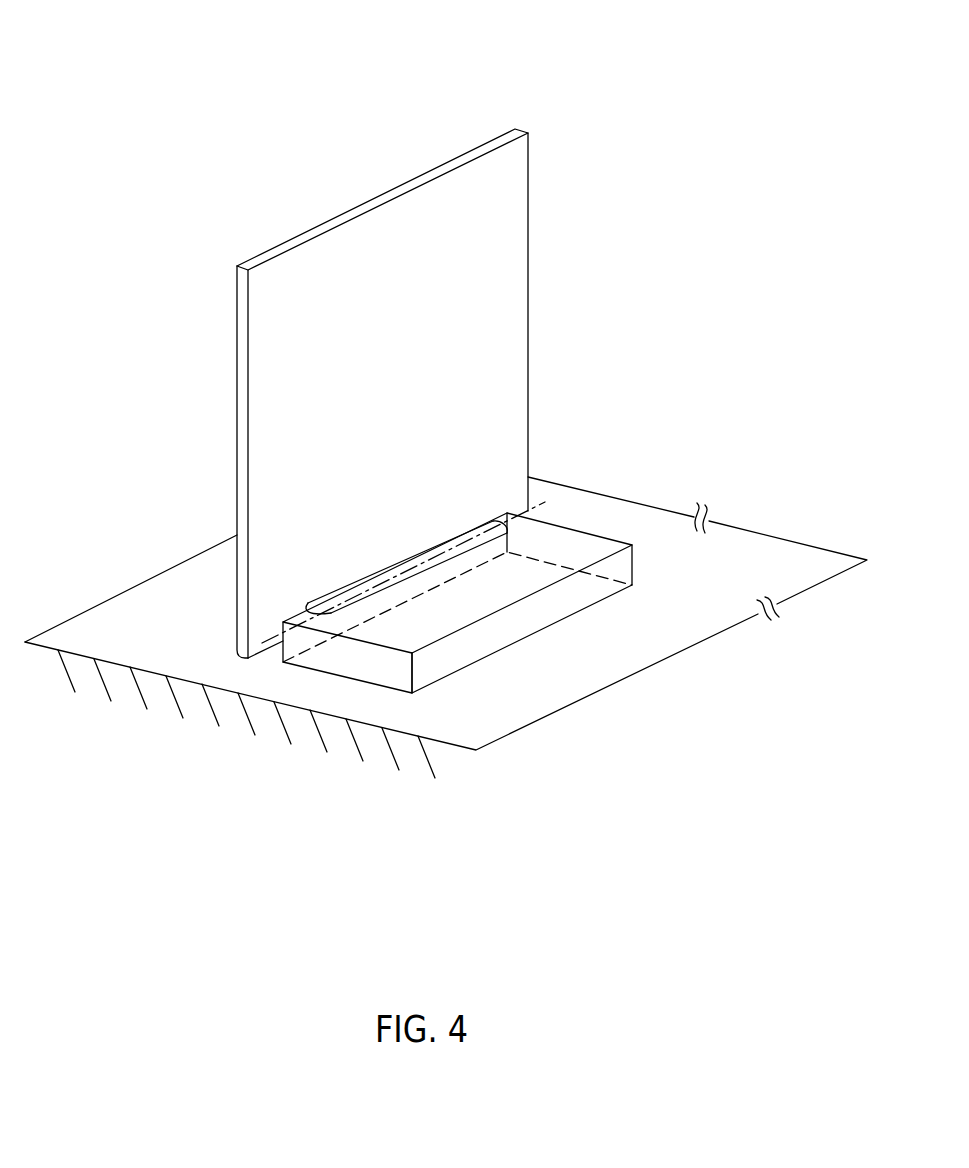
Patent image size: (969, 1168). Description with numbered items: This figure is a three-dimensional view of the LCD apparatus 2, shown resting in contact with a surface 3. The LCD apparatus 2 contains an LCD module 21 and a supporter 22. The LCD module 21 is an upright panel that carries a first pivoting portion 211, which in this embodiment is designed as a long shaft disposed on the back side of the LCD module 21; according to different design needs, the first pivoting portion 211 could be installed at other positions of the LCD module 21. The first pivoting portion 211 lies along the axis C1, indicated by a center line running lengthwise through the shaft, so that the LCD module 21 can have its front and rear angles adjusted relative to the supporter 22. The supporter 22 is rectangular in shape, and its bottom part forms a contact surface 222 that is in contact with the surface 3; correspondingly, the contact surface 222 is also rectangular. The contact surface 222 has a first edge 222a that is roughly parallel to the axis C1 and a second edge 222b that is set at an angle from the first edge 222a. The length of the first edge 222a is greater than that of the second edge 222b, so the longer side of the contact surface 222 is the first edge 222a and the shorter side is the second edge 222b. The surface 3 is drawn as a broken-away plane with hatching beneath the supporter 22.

The LCD apparatus 2 is at (100, 41).
The LCD module 21 is at (353, 217).
The first pivoting portion 211 is at (473, 523).
The axis C1 is at (544, 501).
The supporter 22 is at (500, 609).
The contact surface 222 is at (468, 645).
The first edge 222a is at (598, 603).
The second edge 222b is at (342, 678).
The surface 3 is at (795, 551).